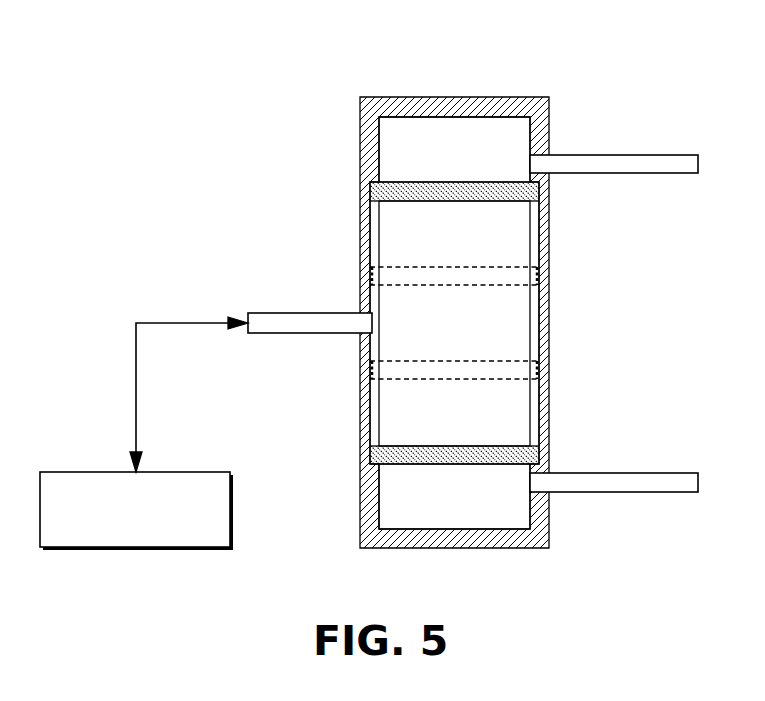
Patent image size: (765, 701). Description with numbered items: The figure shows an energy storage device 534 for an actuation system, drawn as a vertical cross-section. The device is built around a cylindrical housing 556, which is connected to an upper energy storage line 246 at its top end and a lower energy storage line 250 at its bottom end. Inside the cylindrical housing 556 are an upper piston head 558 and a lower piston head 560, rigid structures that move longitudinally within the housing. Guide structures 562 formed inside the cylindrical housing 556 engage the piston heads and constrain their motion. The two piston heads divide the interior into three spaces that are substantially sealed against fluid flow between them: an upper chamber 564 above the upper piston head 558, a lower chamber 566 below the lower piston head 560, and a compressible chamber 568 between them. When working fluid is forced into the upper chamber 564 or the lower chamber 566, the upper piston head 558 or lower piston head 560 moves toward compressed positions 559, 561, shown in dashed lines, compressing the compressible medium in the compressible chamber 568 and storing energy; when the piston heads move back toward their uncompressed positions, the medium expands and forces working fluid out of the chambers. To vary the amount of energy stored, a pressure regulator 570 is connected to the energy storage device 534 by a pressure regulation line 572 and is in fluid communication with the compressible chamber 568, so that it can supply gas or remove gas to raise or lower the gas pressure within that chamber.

The energy storage device 534 is at (314, 129).
The cylindrical housing 556 is at (508, 97).
The upper piston head 558 is at (374, 189).
The compressed position 559 is at (541, 274).
The lower piston head 560 is at (373, 453).
The compressed position 561 is at (541, 366).
The guide structures 562 is at (535, 323).
The upper chamber 564 is at (477, 161).
The lower chamber 566 is at (475, 506).
The compressible chamber 568 is at (475, 334).
The pressure regulator 570 is at (80, 472).
The pressure regulation line 572 is at (343, 313).
The upper energy storage line 246 is at (663, 155).
The lower energy storage line 250 is at (662, 473).